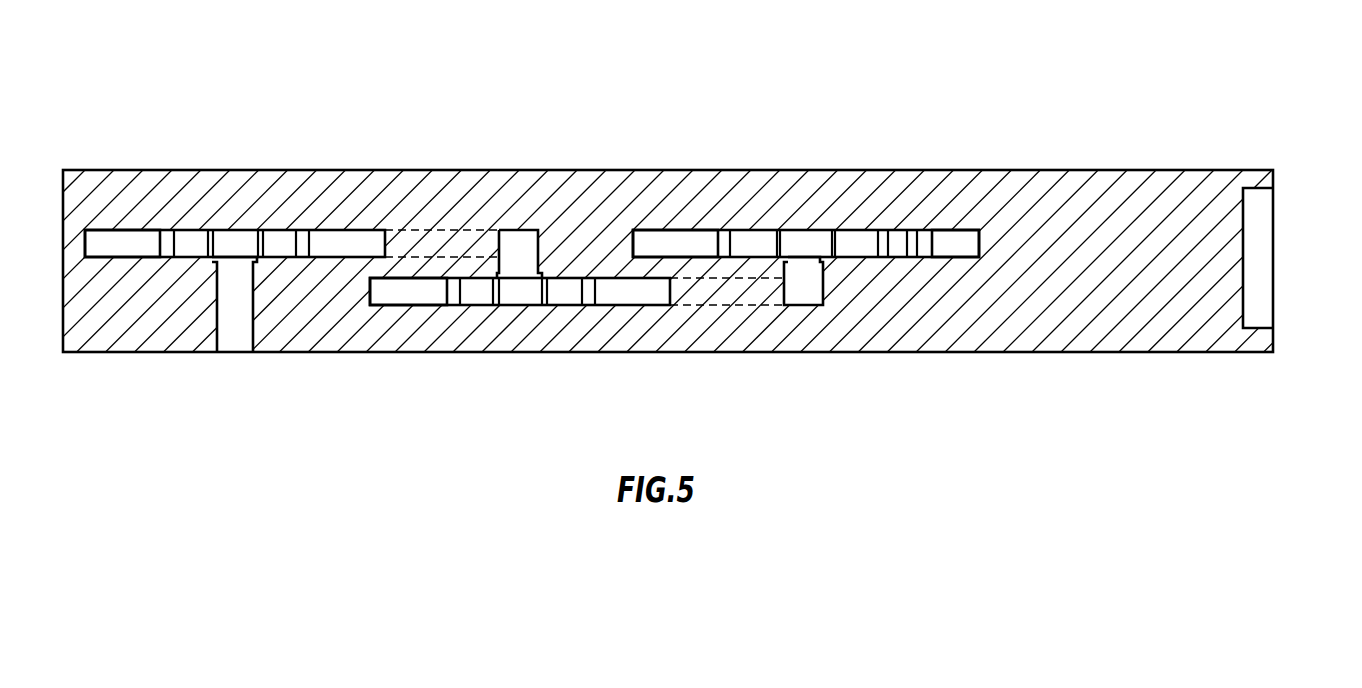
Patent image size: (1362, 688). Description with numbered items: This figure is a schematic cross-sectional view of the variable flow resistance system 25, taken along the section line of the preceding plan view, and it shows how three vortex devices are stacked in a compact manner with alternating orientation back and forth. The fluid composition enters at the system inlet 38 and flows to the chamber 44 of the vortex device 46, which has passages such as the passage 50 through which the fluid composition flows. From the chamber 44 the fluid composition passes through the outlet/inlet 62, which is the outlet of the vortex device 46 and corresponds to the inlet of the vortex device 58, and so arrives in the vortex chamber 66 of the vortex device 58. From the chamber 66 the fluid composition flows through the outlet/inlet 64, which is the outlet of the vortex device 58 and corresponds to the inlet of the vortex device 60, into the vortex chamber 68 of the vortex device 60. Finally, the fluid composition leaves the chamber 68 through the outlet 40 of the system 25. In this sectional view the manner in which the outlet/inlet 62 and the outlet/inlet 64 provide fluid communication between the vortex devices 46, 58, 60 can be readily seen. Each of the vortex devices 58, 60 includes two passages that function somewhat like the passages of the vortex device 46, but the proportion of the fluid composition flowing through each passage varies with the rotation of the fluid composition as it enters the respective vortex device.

The variable flow resistance system 25 is at (1100, 104).
The inlet 38 is at (1262, 208).
The outlet 40 is at (250, 328).
The chamber 44 is at (652, 232).
The vortex device 46 is at (777, 213).
The passage 50 is at (947, 233).
The vortex device 58 is at (594, 326).
The vortex device 60 is at (271, 214).
The outlet/inlet 62 is at (822, 285).
The outlet/inlet 64 is at (537, 252).
The vortex chamber 66 is at (430, 302).
The vortex chamber 68 is at (142, 240).